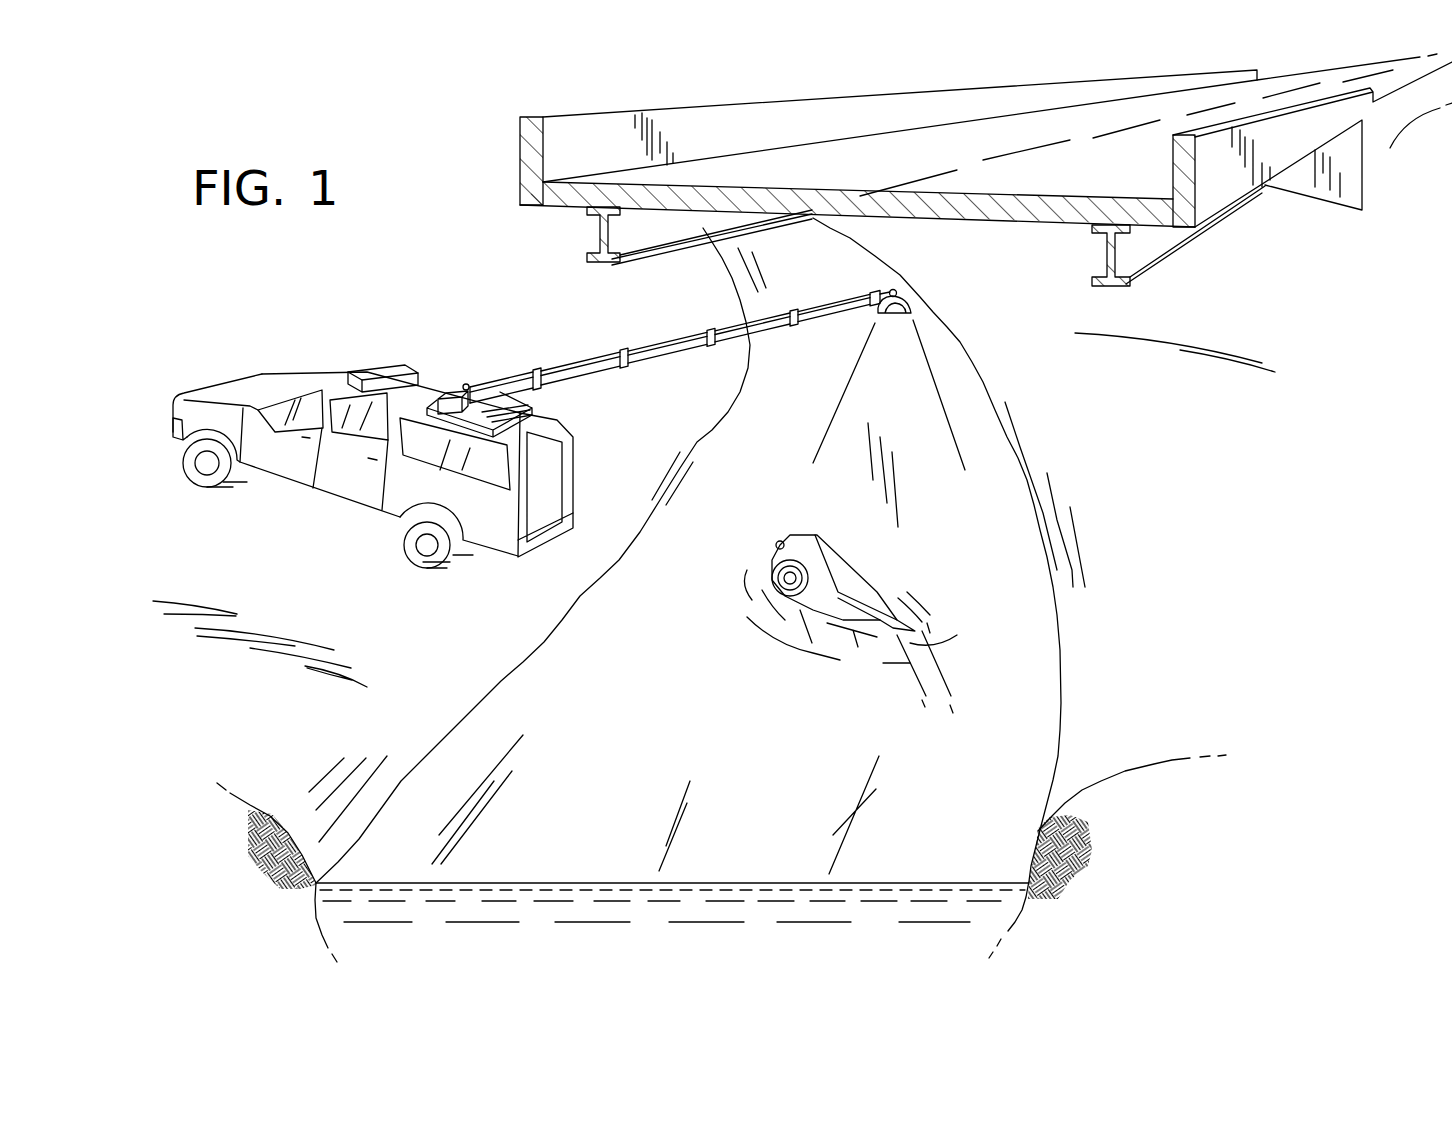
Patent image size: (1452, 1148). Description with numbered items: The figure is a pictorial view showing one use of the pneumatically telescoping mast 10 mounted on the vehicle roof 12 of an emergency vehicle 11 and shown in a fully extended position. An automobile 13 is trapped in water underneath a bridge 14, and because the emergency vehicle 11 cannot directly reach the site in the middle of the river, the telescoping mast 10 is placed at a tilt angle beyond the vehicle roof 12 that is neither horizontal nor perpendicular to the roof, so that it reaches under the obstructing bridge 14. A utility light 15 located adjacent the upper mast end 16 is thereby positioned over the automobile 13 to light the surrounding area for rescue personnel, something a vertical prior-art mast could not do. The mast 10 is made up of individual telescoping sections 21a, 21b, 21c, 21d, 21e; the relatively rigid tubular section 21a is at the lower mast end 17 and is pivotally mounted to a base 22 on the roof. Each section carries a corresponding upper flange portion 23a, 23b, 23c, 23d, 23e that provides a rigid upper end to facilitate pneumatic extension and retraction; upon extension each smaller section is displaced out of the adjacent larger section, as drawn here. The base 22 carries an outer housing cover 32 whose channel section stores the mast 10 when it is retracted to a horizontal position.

The pneumatically telescoping mast 10 is at (583, 350).
The emergency vehicle 11 is at (223, 387).
The vehicle roof 12 is at (393, 403).
The automobile 13 is at (855, 575).
The bridge 14 is at (1048, 267).
The utility light 15 is at (908, 307).
The upper mast end 16 is at (863, 295).
The lower mast end 17 is at (492, 387).
The telescoping section 21a is at (525, 383).
The telescoping section 21b is at (597, 377).
The telescoping section 21c is at (668, 355).
The telescoping section 21d is at (767, 335).
The telescoping section 21e is at (832, 313).
The base 22 is at (485, 440).
The upper flange portion 23a is at (535, 373).
The upper flange portion 23b is at (625, 353).
The upper flange portion 23c is at (708, 332).
The upper flange portion 23d is at (795, 313).
The upper flange portion 23e is at (890, 290).
The outer housing cover 32 is at (462, 420).